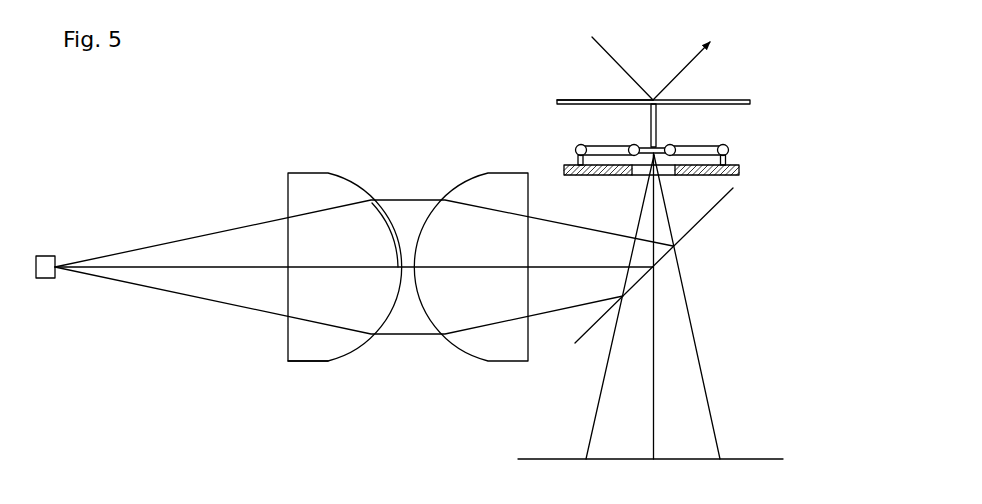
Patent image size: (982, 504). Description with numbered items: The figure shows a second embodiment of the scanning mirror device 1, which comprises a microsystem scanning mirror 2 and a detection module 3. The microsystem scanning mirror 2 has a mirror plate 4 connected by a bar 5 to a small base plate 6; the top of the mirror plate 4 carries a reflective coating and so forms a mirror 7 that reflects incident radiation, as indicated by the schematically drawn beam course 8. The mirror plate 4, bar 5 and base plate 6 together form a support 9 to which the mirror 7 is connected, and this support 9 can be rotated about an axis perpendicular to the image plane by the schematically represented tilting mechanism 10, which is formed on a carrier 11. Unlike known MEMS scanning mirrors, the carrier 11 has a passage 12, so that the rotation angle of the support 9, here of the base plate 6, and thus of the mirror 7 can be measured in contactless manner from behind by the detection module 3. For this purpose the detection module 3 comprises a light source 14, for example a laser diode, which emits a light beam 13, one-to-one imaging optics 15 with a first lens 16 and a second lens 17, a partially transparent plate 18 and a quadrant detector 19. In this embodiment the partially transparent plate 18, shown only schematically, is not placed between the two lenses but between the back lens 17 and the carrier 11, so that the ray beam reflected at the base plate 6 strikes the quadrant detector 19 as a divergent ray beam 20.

The scanning mirror device 1 is at (413, 95).
The microsystem scanning mirror 2 is at (553, 125).
The detection module 3 is at (283, 193).
The mirror plate 4 is at (752, 102).
The bar 5 is at (651, 136).
The base plate 6 is at (661, 147).
The mirror 7 is at (559, 101).
The beam course 8 is at (608, 56).
The support 9 is at (660, 126).
The tilting mechanism 10 is at (575, 146).
The carrier 11 is at (738, 167).
The passage 12 is at (632, 174).
The light beam 13 is at (381, 199).
The light source 14 is at (42, 253).
The imaging optics 15 is at (302, 365).
The first lens 16 is at (300, 173).
The second lens 17 is at (498, 173).
The partially transparent plate 18 is at (698, 228).
The quadrant detector 19 is at (542, 461).
The divergent ray beam 20 is at (690, 305).